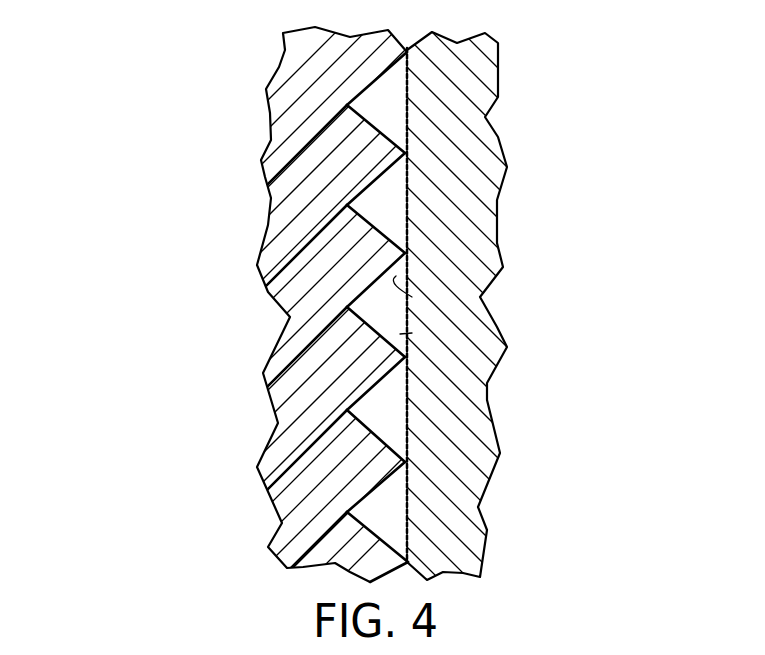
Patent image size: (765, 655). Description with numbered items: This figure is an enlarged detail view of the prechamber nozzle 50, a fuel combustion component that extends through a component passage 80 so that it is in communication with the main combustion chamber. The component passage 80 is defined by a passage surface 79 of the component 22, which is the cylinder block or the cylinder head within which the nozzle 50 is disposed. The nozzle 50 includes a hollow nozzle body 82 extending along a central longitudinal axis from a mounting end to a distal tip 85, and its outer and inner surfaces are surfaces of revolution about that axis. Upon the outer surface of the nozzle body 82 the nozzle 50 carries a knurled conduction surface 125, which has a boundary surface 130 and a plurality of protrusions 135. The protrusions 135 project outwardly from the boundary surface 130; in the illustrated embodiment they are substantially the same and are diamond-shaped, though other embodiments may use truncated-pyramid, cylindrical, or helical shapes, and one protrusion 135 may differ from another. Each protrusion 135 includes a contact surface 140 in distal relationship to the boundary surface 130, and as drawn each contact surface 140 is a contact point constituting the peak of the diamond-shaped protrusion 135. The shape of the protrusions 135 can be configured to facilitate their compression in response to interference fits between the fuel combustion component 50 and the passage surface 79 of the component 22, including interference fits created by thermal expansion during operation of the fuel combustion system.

The component 22 is at (477, 62).
The nozzle 50 is at (292, 74).
The nozzle body 82 is at (283, 95).
The distal tip 85 is at (301, 368).
The contact surface 140 is at (330, 121).
The boundary surface 130 is at (356, 97).
The protrusions 135 is at (372, 126).
The knurled conduction surface 125 is at (392, 191).
The passage surface 79 is at (396, 307).
The component passage 80 is at (412, 333).